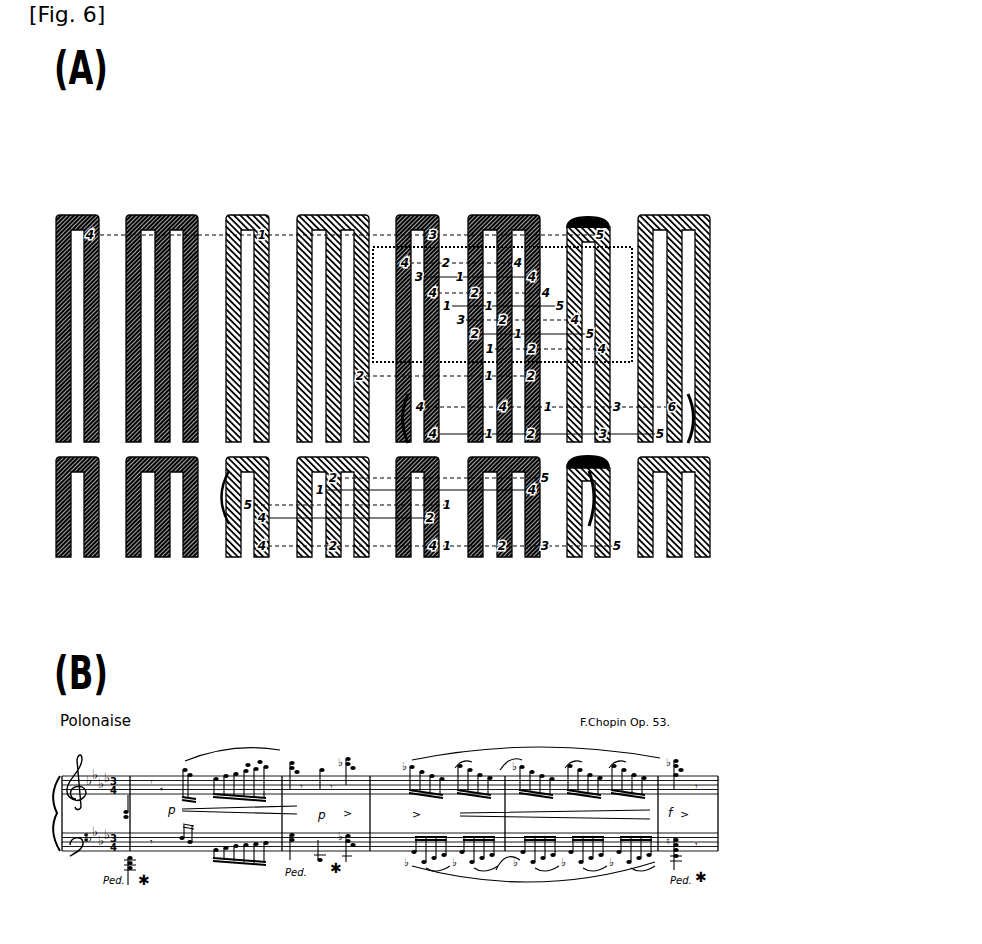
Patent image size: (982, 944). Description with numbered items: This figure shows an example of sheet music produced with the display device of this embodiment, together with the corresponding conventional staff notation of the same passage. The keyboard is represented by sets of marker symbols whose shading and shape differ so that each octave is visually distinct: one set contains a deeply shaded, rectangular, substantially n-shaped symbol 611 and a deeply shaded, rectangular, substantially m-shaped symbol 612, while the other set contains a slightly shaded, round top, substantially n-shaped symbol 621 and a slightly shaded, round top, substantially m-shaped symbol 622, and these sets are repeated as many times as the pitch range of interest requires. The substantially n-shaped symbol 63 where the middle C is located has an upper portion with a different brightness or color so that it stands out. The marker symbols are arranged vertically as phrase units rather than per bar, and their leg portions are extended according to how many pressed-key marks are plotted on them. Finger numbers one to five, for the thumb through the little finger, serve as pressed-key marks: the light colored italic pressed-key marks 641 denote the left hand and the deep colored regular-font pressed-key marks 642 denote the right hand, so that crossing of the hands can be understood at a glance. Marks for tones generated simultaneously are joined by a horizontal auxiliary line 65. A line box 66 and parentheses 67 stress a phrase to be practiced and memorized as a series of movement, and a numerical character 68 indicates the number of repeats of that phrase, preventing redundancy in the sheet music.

The deeply shaded, rectangular, substantially n-shaped symbol 611 is at (71, 213).
The deeply shaded, rectangular, substantially m-shaped symbol 612 is at (141, 213).
The slightly shaded, round top, substantially n-shaped symbol 621 is at (230, 213).
The slightly shaded, round top, substantially m-shaped symbol 622 is at (321, 213).
The substantially n-shaped symbol where the middle C is located 63 is at (580, 215).
The pressed-key marks for the left hand 641 is at (264, 232).
The pressed-key marks for the right hand 642 is at (434, 232).
The horizontal auxiliary line 65 is at (383, 232).
The line box 66 is at (620, 246).
The parentheses 67 is at (226, 524).
The numerical character indicating the number of repeats 68 is at (625, 512).